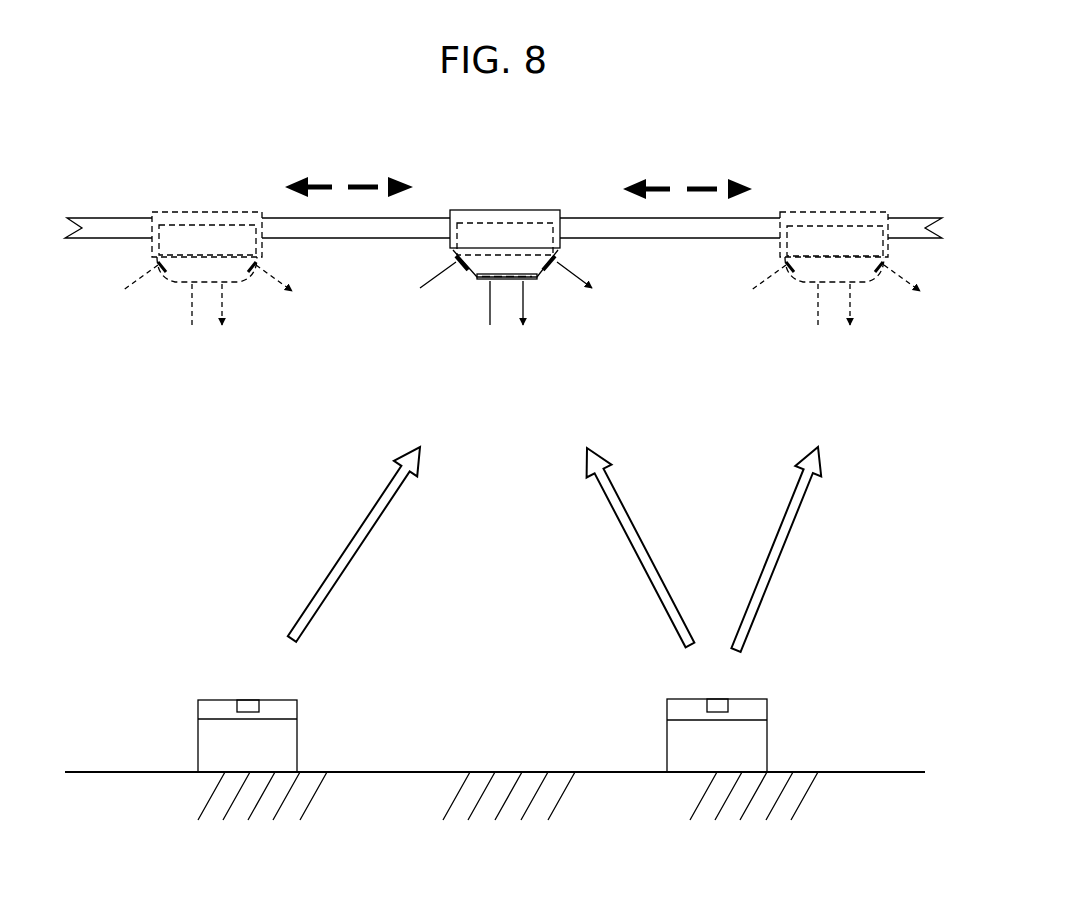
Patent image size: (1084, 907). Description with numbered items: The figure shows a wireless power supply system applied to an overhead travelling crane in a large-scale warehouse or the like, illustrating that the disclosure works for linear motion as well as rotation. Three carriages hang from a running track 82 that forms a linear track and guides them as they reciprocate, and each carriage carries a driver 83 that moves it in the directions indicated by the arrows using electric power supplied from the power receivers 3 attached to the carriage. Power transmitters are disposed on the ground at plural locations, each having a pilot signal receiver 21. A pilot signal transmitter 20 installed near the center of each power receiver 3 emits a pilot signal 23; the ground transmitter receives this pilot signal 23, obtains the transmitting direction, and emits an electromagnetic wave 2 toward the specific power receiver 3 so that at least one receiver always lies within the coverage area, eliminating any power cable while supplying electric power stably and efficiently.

The electromagnetic wave 2 is at (327, 578).
The power receiver 3 is at (533, 279).
The pilot signal transmitter 20 is at (454, 262).
The pilot signal receiver 21 is at (245, 700).
The pilot signal 23 is at (469, 290).
The running track 82 is at (625, 239).
The driver 83 is at (478, 223).